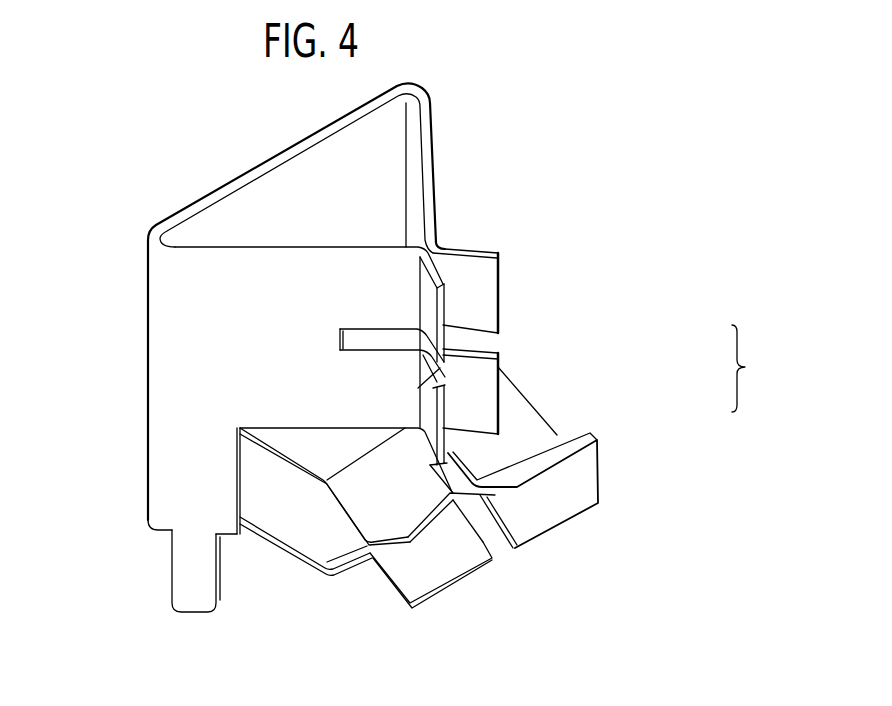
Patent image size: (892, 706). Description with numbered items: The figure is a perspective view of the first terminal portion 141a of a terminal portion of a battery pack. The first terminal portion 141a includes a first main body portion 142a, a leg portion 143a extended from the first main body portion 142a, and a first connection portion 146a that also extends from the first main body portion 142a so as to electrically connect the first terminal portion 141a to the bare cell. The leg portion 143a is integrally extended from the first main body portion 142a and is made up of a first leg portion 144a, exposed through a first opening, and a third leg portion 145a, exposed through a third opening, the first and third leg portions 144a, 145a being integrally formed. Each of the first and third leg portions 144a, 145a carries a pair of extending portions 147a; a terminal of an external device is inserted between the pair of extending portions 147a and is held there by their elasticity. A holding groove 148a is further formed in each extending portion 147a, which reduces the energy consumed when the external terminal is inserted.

The first terminal portion 141a is at (621, 127).
The first main body portion 142a is at (243, 452).
The leg portion 143a is at (762, 368).
The first leg portion 144a is at (503, 303).
The third leg portion 145a is at (578, 525).
The first connection portion 146a is at (183, 570).
The extending portions 147a is at (490, 405).
The holding groove 148a is at (442, 362).